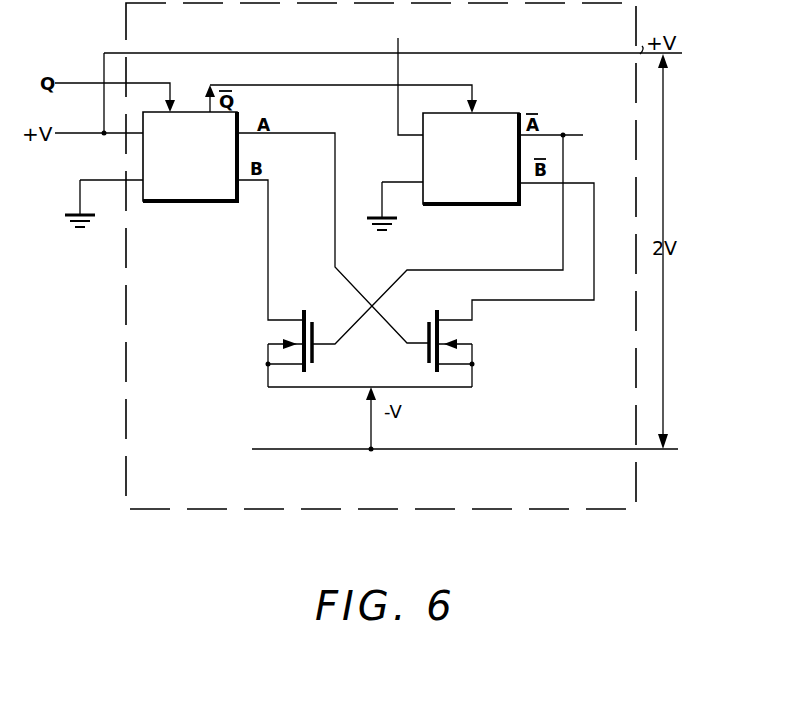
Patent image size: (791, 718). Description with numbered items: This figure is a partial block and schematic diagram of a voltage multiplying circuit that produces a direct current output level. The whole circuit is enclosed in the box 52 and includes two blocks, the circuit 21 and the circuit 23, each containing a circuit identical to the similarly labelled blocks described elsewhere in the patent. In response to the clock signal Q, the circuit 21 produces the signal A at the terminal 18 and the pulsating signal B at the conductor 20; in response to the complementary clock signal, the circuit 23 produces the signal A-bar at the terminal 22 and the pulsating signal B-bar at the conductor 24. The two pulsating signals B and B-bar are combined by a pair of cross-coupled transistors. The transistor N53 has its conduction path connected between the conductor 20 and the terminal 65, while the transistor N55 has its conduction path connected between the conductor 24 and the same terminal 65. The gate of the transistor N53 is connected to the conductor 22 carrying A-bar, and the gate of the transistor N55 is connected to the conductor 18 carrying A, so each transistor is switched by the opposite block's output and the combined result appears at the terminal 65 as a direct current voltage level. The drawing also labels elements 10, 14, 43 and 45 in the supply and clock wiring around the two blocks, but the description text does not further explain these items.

The +V supply node 10 is at (107, 142).
The ground connection 14 is at (96, 185).
The terminal 18 is at (296, 134).
The conductor 20 is at (267, 183).
The circuit 21 is at (182, 201).
The terminal 22 is at (565, 132).
The circuit 23 is at (472, 206).
The conductor 24 is at (578, 178).
The +V supply rail 43 is at (118, 50).
The Q-bar signal line 45 is at (346, 86).
The box 52 is at (263, 502).
The terminal 65 is at (371, 389).
The transistor N53 is at (230, 343).
The transistor N55 is at (513, 343).